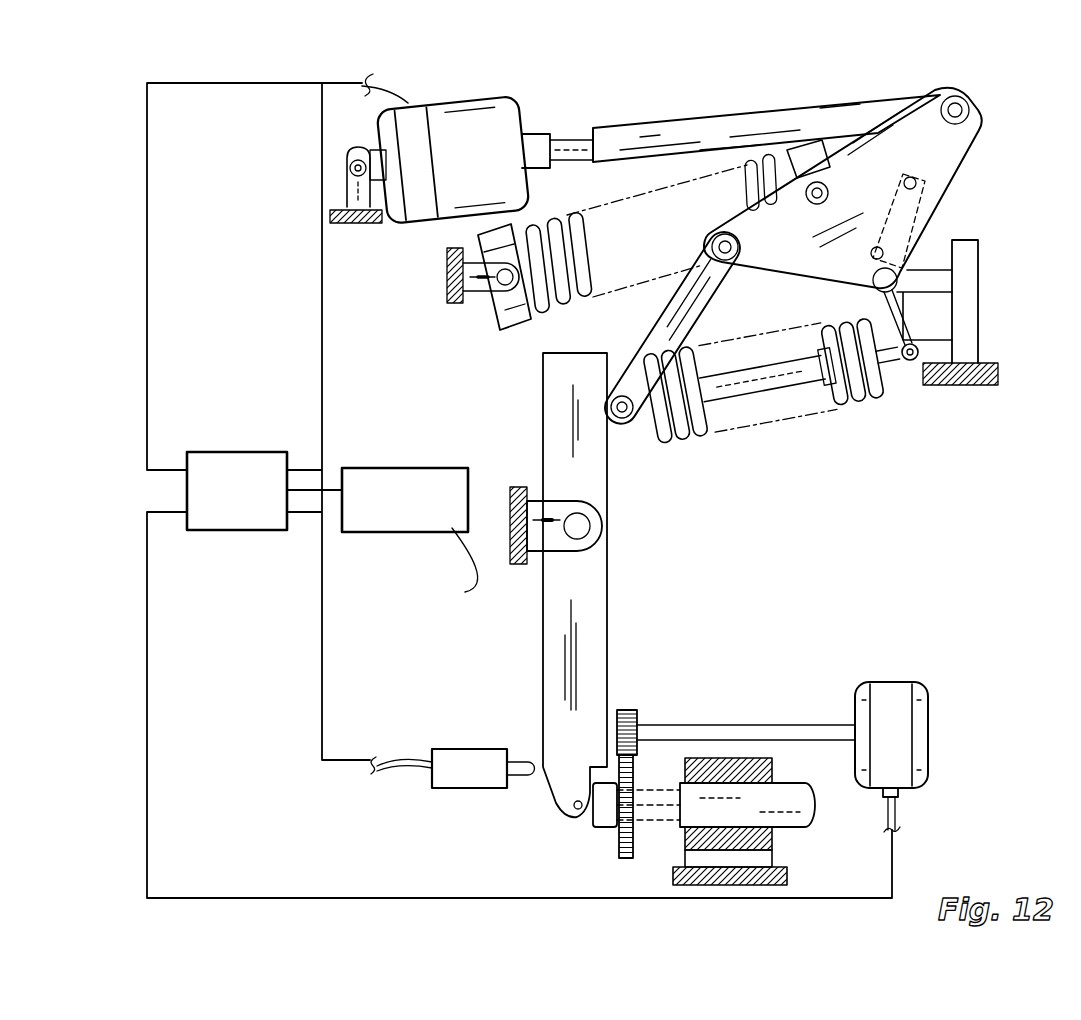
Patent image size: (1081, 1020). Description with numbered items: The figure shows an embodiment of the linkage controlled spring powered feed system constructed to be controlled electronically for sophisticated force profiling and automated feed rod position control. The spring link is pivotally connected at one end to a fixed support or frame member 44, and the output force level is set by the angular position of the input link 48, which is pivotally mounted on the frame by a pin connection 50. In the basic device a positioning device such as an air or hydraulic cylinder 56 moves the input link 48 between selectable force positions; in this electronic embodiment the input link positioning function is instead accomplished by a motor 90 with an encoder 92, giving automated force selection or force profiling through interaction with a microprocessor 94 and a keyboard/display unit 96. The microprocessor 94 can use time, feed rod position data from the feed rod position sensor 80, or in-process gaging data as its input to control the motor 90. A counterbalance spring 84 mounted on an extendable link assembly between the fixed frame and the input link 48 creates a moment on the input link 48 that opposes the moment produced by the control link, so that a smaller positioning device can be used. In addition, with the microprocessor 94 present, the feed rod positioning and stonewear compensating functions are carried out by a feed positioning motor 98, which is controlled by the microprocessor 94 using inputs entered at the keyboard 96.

The frame member 44 is at (957, 351).
The input link 48 is at (968, 170).
The pin connection 50 is at (912, 362).
The cylinder 56 is at (866, 102).
The feed rod position sensor 80 is at (448, 788).
The counterbalance spring 84 is at (568, 306).
The motor 90 is at (527, 117).
The encoder 92 is at (416, 102).
The microprocessor 94 is at (218, 472).
The keyboard/display unit 96 is at (445, 487).
The feed positioning motor 98 is at (935, 700).